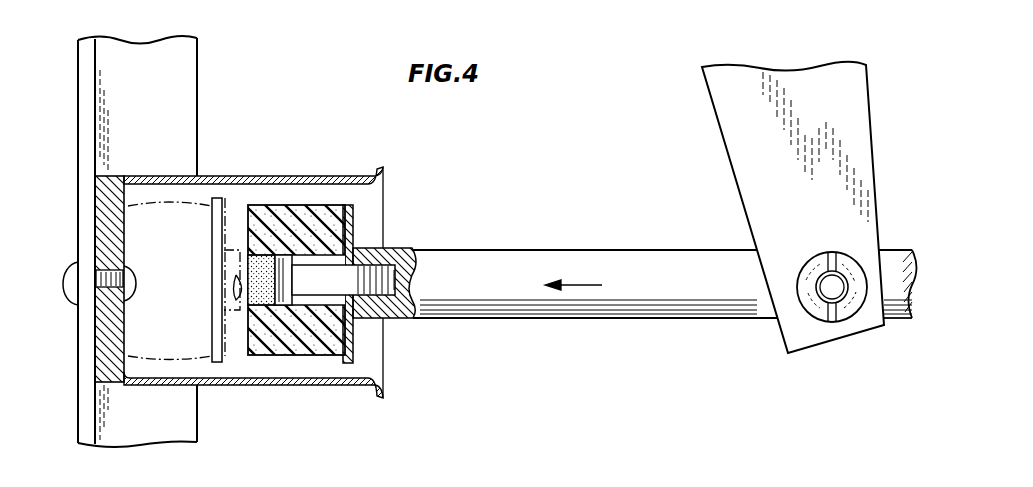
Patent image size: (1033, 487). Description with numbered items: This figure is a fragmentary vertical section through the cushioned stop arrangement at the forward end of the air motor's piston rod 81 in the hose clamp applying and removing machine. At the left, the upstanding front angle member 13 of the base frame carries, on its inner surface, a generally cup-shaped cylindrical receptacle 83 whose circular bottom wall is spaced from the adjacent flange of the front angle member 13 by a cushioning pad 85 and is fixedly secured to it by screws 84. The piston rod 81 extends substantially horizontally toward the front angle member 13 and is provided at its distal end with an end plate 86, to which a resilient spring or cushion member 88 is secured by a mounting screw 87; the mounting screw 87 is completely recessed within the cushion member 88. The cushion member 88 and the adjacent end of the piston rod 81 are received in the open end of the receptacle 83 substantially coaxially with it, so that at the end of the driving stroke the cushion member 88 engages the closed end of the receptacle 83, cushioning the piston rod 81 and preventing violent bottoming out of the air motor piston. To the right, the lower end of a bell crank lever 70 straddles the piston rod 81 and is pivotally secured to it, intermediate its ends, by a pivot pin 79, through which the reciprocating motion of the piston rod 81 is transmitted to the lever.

The front angle member 13 is at (152, 50).
The bell crank lever 70 is at (735, 118).
The pivot pin 79 is at (838, 292).
The piston rod 81 is at (677, 258).
The cup-shaped cylindrical receptacle 83 is at (325, 177).
The screw 84 is at (128, 285).
The cushioning pad 85 is at (118, 177).
The end plate 86 is at (223, 205).
The mounting screw 87 is at (343, 270).
The cushion member 88 is at (320, 356).